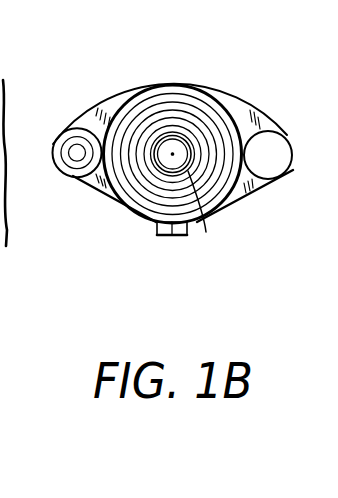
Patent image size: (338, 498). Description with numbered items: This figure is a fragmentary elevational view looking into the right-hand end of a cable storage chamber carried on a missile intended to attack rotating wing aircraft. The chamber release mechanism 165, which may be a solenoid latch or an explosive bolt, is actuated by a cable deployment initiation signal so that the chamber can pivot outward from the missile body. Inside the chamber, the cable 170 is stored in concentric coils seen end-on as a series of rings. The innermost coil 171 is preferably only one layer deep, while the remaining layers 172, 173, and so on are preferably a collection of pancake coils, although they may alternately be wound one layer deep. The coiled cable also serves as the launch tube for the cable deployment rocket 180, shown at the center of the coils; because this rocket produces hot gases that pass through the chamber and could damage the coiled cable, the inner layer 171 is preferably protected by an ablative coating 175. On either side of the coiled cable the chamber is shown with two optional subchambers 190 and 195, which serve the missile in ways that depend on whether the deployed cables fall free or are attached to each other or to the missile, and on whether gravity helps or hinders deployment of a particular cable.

The chamber release mechanism 165 is at (6, 234).
The cable 170 is at (232, 124).
The innermost coil of cable 171 is at (190, 131).
The cable layer 172 is at (156, 120).
The cable layer 173 is at (135, 123).
The ablative coating 175 is at (206, 232).
The cable deployment rocket 180 is at (169, 165).
The subchamber 190 is at (73, 174).
The subchamber 195 is at (275, 168).